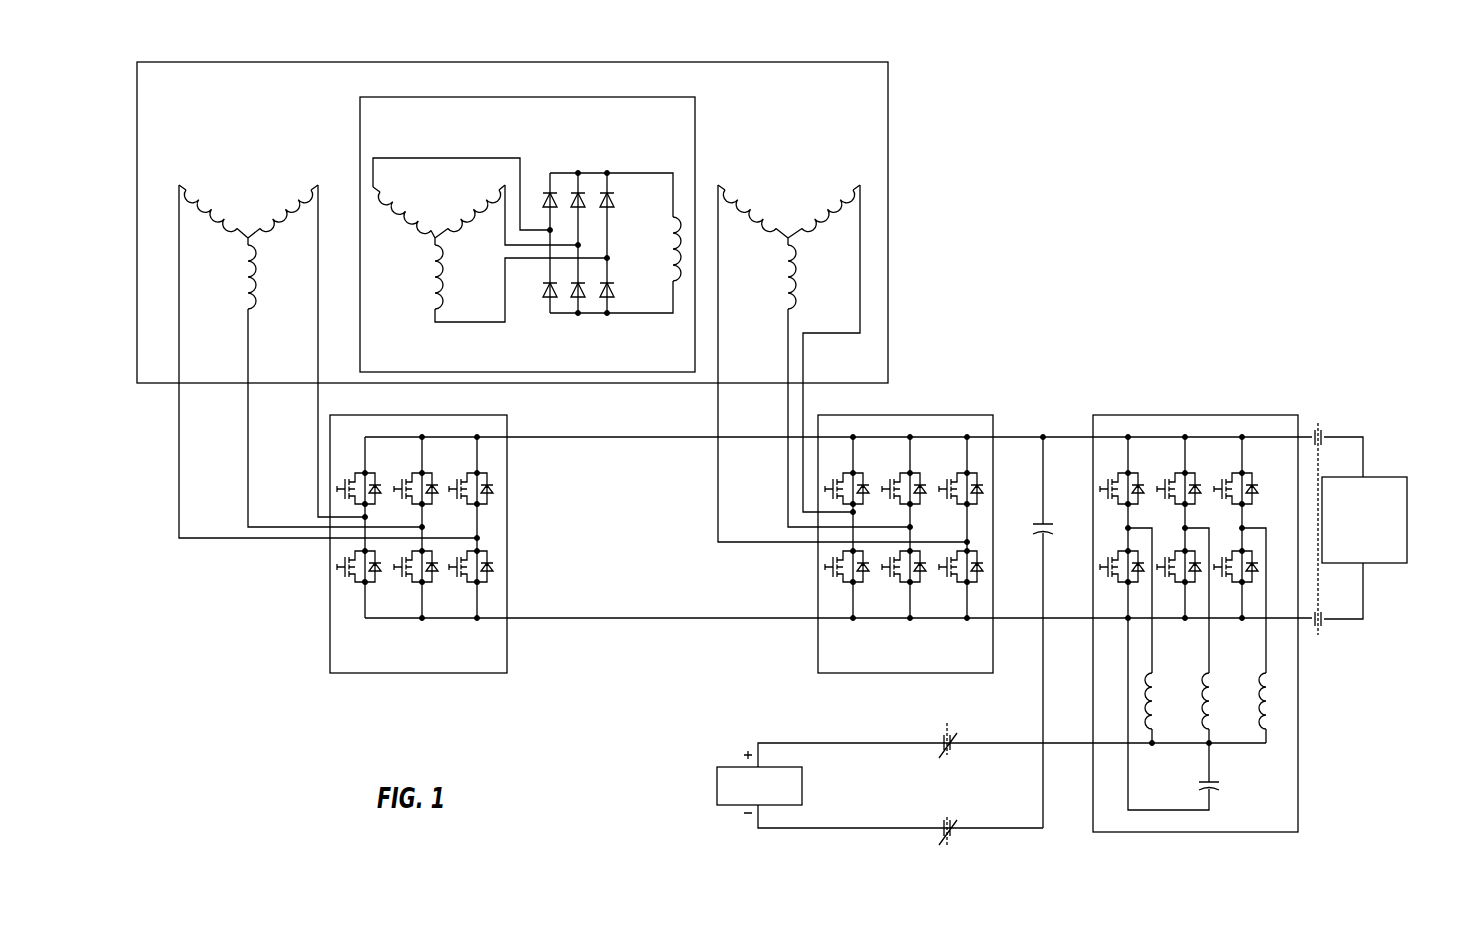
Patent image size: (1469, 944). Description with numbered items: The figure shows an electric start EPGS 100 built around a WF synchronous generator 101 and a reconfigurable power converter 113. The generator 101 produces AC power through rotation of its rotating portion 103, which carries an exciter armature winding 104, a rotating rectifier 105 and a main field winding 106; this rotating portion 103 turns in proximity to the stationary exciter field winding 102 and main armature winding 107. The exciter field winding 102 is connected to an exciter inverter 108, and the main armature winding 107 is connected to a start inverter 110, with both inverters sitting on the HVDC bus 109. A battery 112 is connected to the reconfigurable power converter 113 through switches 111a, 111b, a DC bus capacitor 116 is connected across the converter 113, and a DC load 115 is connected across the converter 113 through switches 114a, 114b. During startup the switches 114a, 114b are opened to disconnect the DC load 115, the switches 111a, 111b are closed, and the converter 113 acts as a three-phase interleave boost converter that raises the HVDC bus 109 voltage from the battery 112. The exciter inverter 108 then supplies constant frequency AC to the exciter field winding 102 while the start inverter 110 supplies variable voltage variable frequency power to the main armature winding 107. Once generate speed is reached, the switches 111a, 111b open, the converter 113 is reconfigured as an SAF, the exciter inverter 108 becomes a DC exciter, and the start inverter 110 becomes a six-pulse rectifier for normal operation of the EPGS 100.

The electric start EPGS 100 is at (1245, 165).
The WF synchronous generator 101 is at (905, 93).
The exciter field winding 102 is at (238, 170).
The rotating portion 103 is at (400, 352).
The exciter armature winding 104 is at (440, 183).
The rotating rectifier 105 is at (590, 150).
The main field winding 106 is at (665, 247).
The main armature winding 107 is at (790, 190).
The exciter inverter 108 is at (387, 674).
The HVDC bus 109 is at (612, 447).
The start inverter 110 is at (880, 674).
The switch 111a is at (952, 750).
The switch 111b is at (942, 822).
The battery 112 is at (717, 780).
The reconfigurable power converter 113 is at (1300, 800).
The switch 114a is at (1328, 432).
The switch 114b is at (1330, 628).
The DC load 115 is at (1383, 565).
The DC bus capacitor 116 is at (1038, 541).